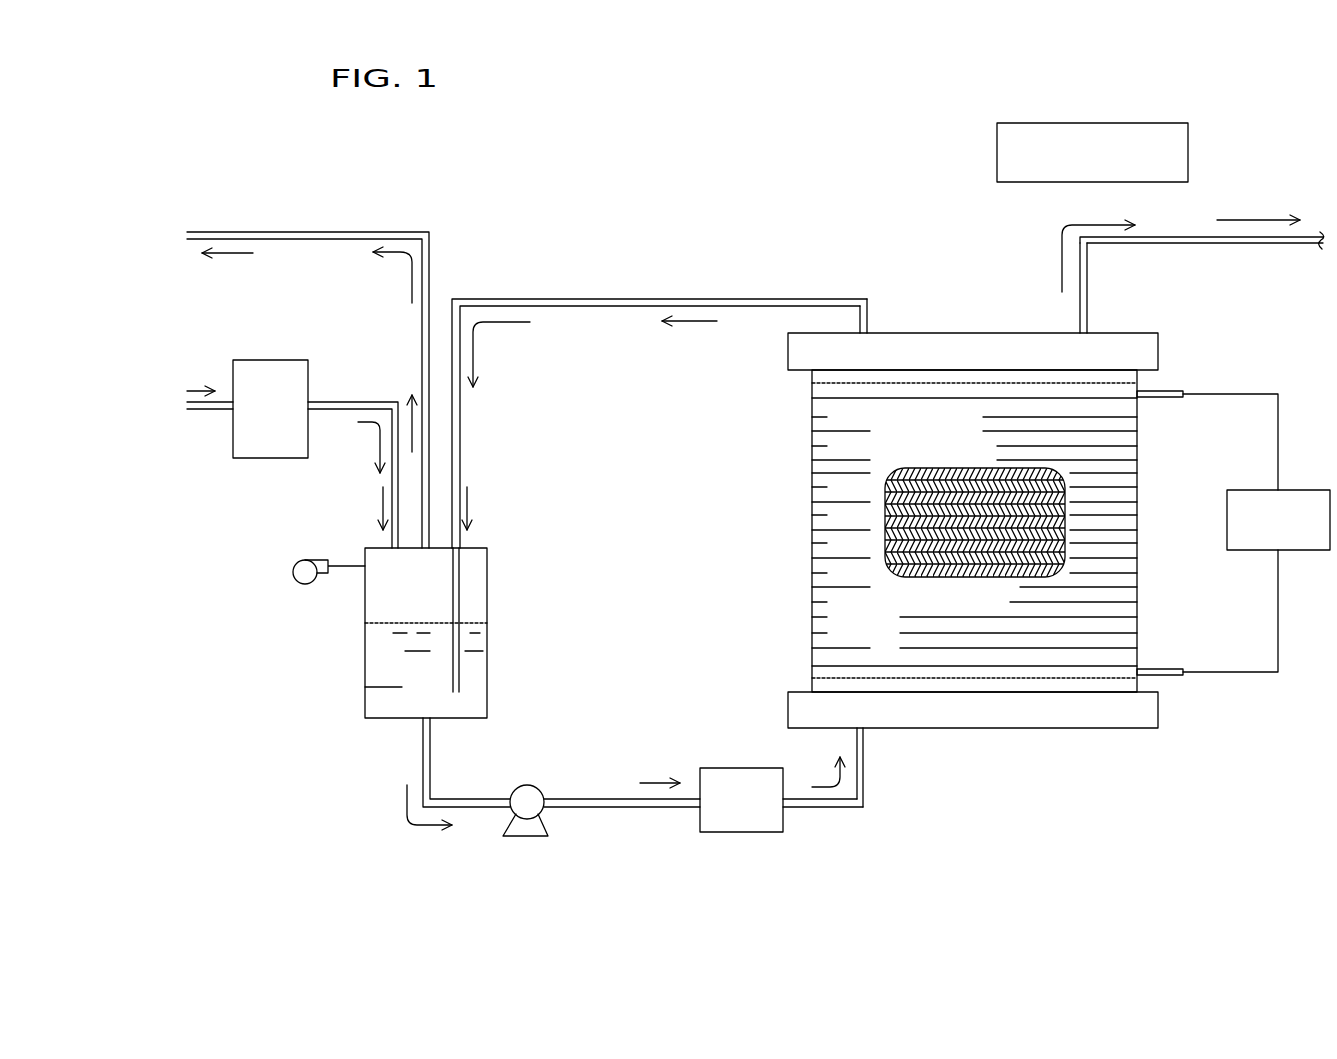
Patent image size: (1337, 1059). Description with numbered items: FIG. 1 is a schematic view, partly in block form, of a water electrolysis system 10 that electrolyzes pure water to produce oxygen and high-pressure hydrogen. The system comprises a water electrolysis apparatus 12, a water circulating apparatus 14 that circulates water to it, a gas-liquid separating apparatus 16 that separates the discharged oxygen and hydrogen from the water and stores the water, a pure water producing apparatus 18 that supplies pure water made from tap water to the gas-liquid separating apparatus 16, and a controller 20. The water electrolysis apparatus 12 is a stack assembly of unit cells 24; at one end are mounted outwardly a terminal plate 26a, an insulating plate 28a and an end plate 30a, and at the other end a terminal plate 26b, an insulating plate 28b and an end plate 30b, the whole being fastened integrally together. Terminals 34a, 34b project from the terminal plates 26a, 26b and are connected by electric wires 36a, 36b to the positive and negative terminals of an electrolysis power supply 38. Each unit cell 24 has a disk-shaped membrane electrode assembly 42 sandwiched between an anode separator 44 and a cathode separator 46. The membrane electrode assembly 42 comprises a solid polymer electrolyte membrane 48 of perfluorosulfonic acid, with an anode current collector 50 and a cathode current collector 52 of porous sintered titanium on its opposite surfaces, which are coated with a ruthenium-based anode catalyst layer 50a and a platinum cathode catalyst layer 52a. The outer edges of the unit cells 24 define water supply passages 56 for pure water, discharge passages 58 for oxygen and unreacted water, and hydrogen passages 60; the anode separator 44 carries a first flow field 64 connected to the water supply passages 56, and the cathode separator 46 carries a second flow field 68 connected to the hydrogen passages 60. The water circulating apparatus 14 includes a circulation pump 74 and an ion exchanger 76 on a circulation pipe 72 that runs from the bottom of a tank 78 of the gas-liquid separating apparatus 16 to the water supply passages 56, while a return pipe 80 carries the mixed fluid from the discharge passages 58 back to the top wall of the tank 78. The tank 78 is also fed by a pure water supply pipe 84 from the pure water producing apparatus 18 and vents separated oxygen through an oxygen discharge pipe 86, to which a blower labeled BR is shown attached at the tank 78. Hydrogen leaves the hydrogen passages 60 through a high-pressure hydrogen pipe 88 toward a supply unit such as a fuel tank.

The water electrolysis system 10 is at (608, 151).
The water electrolysis apparatus 12 is at (917, 276).
The water circulating apparatus 14 is at (803, 835).
The gas-liquid separating apparatus 16 is at (490, 562).
The pure water producing apparatus 18 is at (267, 458).
The controller 20 is at (1167, 122).
The unit cells 24 is at (812, 583).
The terminal plate 26a is at (997, 398).
The terminal plate 26b is at (995, 666).
The insulating plate 28a is at (968, 383).
The insulating plate 28b is at (965, 678).
The end plate 30a is at (1152, 328).
The end plate 30b is at (1148, 732).
The terminal 34a is at (1158, 398).
The terminal 34b is at (1158, 667).
The electric wire 36a is at (1277, 408).
The electric wire 36b is at (1277, 598).
The electrolysis power supply 38 is at (1300, 488).
The membrane electrode assembly 42 is at (757, 487).
The anode separator 44 is at (945, 492).
The cathode separator 46 is at (935, 578).
The solid polymer electrolyte membrane 48 is at (887, 525).
The anode current collector 50 is at (887, 517).
The anode catalyst layer 50a is at (963, 487).
The cathode current collector 52 is at (887, 533).
The cathode catalyst layer 52a is at (972, 533).
The water supply passages 56 is at (868, 730).
The discharge passages 58 is at (872, 330).
The hydrogen passages 60 is at (1077, 330).
The first flow field 64 is at (897, 476).
The second flow field 68 is at (893, 570).
The circulation pipe 72 is at (588, 798).
The circulation pump 74 is at (527, 785).
The ion exchanger 76 is at (717, 768).
The tank 78 is at (488, 663).
The return pipe 80 is at (600, 307).
The pure water supply pipe 84 is at (343, 410).
The oxygen discharge pipe 86 is at (336, 230).
The high-pressure hydrogen pipe 88 is at (1263, 245).
The blower BR is at (290, 573).